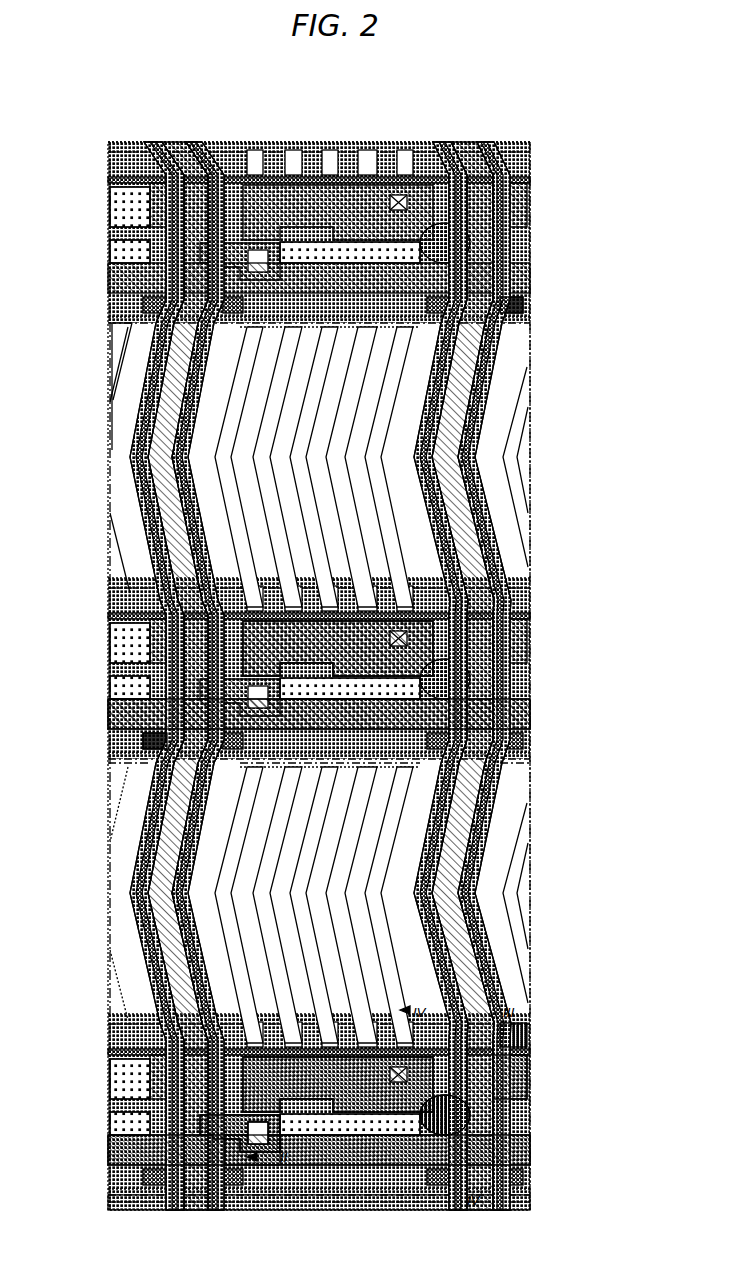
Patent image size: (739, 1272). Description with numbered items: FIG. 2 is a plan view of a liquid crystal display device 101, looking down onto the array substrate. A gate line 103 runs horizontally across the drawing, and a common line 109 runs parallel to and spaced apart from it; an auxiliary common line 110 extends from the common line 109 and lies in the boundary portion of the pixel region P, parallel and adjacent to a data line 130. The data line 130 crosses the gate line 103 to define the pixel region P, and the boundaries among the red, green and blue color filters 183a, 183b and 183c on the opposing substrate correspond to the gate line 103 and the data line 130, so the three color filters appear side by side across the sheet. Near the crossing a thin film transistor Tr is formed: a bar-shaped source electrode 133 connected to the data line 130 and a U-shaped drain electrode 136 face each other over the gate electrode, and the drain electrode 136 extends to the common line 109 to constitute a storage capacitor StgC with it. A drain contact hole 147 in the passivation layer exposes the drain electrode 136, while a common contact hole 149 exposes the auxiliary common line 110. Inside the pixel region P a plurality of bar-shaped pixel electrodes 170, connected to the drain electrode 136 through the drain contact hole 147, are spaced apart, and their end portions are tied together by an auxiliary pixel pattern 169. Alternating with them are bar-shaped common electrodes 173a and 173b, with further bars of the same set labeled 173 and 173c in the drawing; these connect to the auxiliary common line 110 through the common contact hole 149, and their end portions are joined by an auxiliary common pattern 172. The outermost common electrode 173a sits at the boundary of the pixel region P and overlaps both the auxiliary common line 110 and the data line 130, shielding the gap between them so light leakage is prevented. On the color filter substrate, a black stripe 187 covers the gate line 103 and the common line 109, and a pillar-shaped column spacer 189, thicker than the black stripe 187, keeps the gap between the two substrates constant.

The liquid crystal display device 101 is at (400, 130).
The gate line 103 is at (527, 724).
The common line 109 is at (515, 638).
The auxiliary common line 110 is at (137, 405).
The data line 130 is at (140, 528).
The source electrode 133 is at (257, 1170).
The drain electrode 136 is at (280, 1153).
The drain contact hole 147 is at (530, 1083).
The common contact hole 149 is at (150, 752).
The auxiliary pixel pattern 169 is at (343, 533).
The pixel electrodes 170 is at (140, 488).
The auxiliary common pattern 172 is at (507, 313).
The branch electrode 173 is at (320, 510).
The outermost common electrode 173a is at (213, 378).
The common electrode 173b is at (260, 482).
The third branch electrode 173c is at (347, 437).
The red color filter 183a is at (330, 853).
The green color filter 183b is at (506, 853).
The blue color filter 183c is at (124, 868).
The black stripe 187 is at (513, 1032).
The column spacer 189 is at (465, 1110).
The pixel region P is at (507, 357).
The storage capacitor StgC is at (513, 660).
The thin film transistor Tr is at (232, 1160).